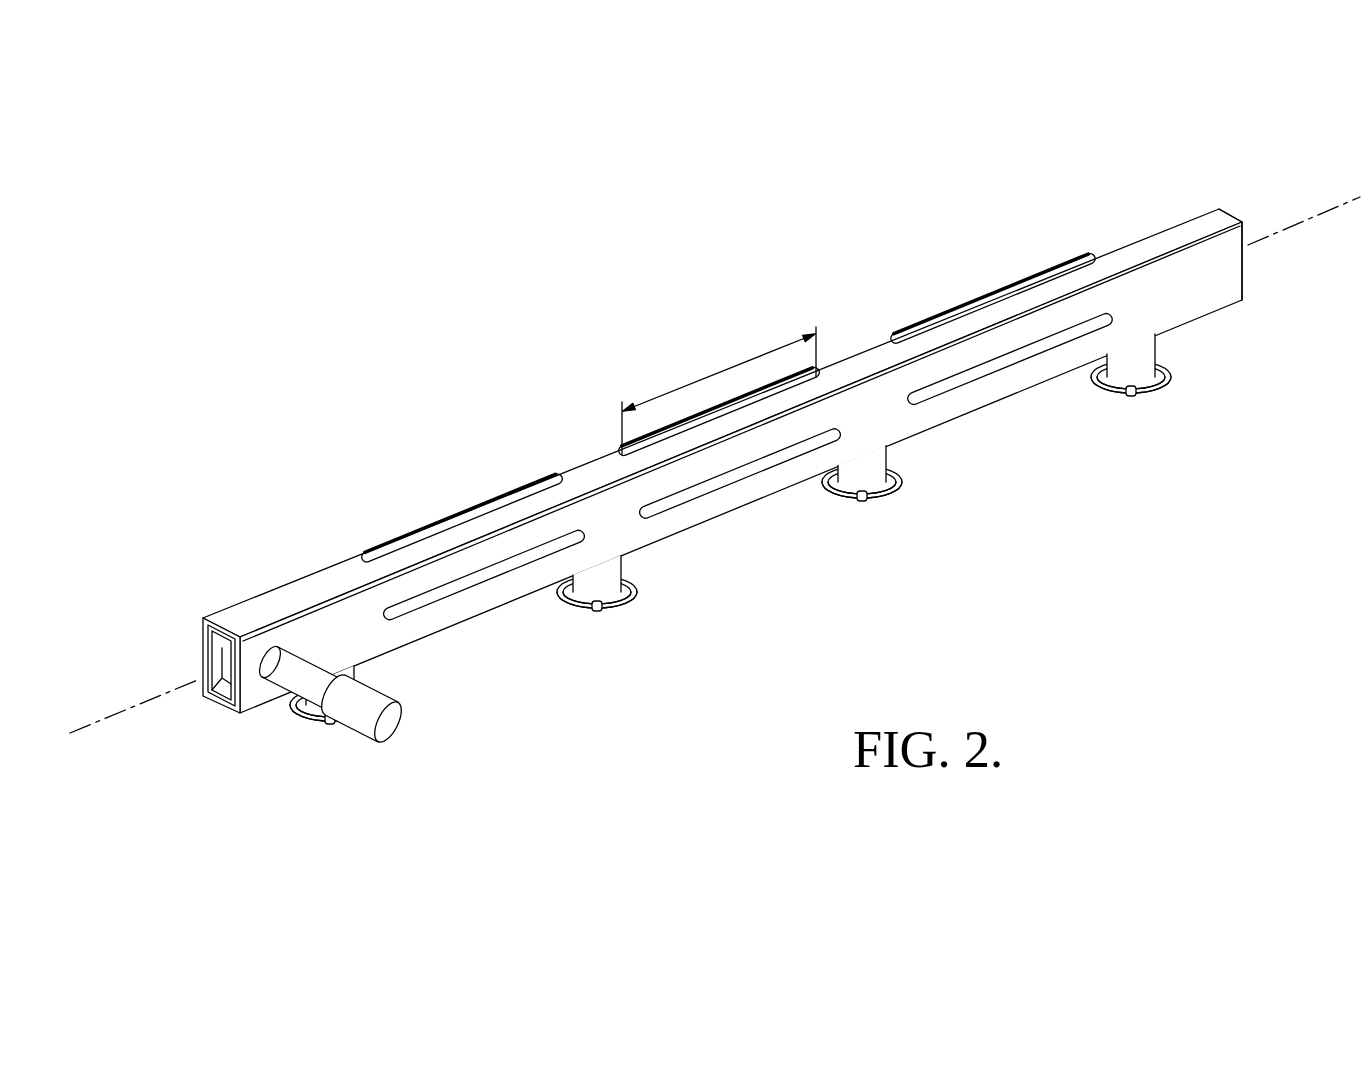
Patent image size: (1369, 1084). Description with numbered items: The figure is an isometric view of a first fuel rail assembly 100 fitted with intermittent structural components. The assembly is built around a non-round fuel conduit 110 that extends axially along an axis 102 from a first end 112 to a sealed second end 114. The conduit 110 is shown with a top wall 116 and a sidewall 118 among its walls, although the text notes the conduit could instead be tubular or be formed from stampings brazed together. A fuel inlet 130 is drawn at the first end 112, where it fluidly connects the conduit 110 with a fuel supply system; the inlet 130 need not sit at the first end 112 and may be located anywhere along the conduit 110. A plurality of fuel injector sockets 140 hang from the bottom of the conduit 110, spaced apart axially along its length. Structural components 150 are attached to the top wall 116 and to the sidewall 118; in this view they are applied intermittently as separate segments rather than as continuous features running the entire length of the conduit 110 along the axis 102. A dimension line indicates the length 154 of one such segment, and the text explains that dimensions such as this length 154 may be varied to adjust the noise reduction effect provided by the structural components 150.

The first fuel rail assembly 100 is at (722, 475).
The axis 102 is at (132, 709).
The non-round fuel conduit 110 is at (722, 416).
The first end 112 is at (204, 648).
The sealed second end 114 is at (1226, 212).
The top wall 116 is at (1207, 210).
The sidewall 118 is at (1232, 291).
The fuel inlet 130 is at (353, 722).
The fuel injector sockets 140 is at (1138, 375).
The structural components 150 is at (1002, 291).
The length 154 is at (760, 357).